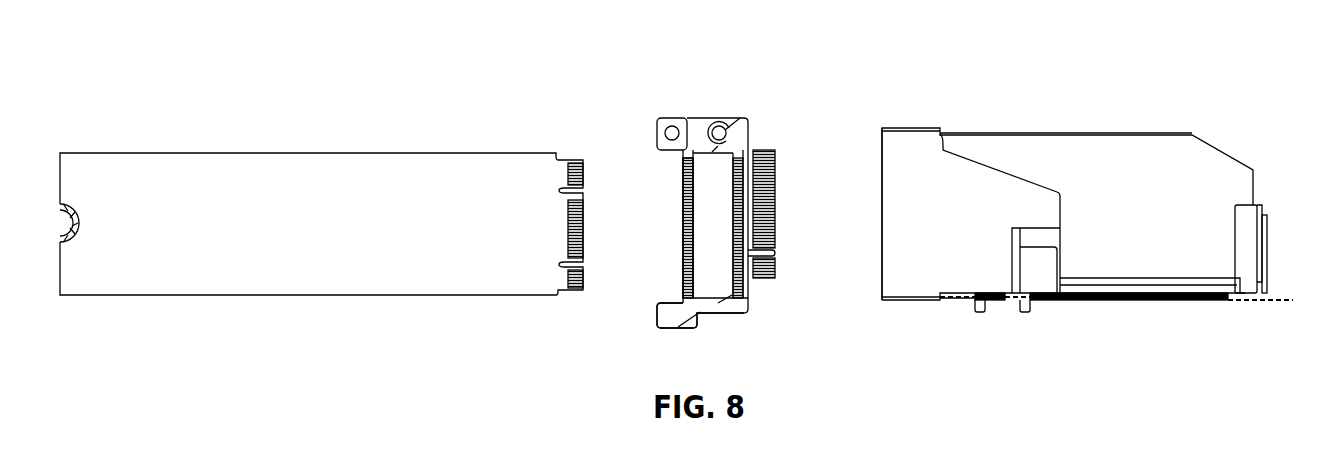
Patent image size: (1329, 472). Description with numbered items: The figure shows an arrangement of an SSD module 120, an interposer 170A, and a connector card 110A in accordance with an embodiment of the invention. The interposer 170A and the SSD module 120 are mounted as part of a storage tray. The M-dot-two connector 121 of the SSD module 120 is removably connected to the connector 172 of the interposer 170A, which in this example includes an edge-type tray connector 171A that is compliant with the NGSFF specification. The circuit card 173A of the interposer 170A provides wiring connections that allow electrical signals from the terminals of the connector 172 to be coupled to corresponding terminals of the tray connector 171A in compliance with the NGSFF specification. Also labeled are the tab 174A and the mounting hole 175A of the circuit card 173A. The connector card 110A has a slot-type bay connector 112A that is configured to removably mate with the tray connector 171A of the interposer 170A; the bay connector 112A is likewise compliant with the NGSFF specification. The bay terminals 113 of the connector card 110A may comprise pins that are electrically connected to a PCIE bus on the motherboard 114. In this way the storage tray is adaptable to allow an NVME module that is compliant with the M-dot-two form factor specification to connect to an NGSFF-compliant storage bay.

The SSD module 120 is at (253, 152).
The M.2 connector 121 is at (590, 178).
The interposer 170A is at (717, 72).
The edge-type tray connector 171A is at (775, 162).
The connector 172 is at (698, 230).
The circuit card 173A is at (698, 117).
The tab 174A is at (670, 322).
The mounting hole 175A is at (720, 117).
The connector card 110A is at (1095, 224).
The slot-type bay connector 112A is at (878, 183).
The bay terminals 113 is at (1147, 305).
The motherboard 114 is at (1287, 300).